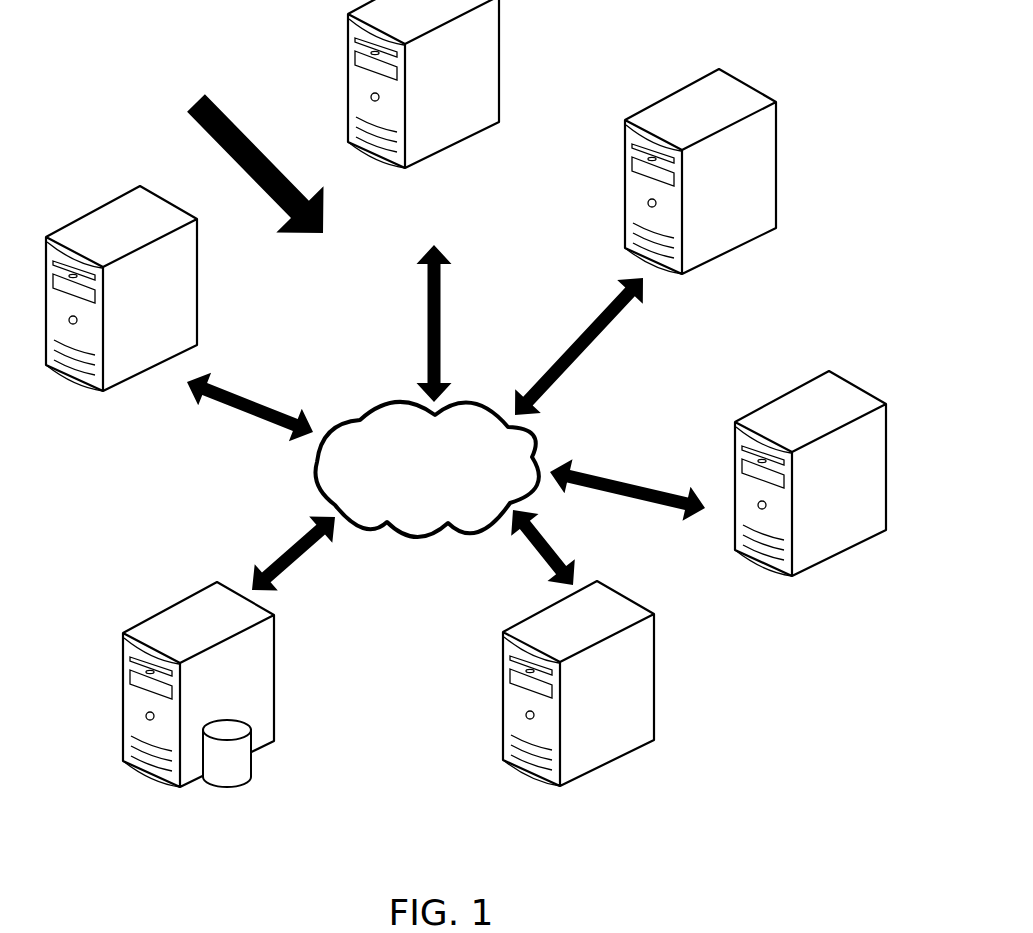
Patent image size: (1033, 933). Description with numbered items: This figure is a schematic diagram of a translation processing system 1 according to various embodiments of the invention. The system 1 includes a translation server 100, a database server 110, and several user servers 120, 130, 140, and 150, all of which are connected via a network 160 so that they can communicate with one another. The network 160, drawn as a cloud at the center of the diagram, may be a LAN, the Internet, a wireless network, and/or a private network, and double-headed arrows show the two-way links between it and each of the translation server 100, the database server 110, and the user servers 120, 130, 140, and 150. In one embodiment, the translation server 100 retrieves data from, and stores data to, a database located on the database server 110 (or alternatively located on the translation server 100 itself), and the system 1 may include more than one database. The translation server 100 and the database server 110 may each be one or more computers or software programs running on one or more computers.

The system 1 is at (255, 156).
The translation server 100 is at (472, 113).
The database server 110 is at (245, 718).
The user server 120 is at (748, 198).
The user server 130 is at (840, 490).
The user server 140 is at (624, 714).
The user server 150 is at (169, 320).
The network 160 is at (426, 503).